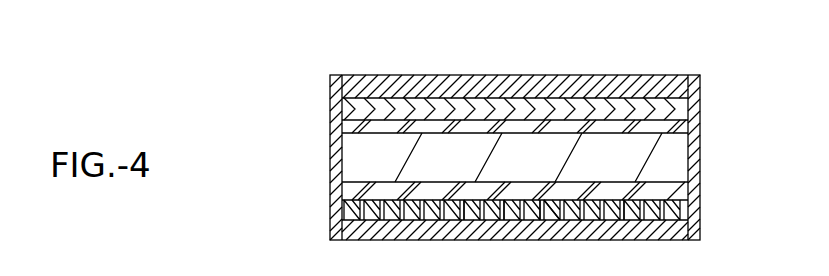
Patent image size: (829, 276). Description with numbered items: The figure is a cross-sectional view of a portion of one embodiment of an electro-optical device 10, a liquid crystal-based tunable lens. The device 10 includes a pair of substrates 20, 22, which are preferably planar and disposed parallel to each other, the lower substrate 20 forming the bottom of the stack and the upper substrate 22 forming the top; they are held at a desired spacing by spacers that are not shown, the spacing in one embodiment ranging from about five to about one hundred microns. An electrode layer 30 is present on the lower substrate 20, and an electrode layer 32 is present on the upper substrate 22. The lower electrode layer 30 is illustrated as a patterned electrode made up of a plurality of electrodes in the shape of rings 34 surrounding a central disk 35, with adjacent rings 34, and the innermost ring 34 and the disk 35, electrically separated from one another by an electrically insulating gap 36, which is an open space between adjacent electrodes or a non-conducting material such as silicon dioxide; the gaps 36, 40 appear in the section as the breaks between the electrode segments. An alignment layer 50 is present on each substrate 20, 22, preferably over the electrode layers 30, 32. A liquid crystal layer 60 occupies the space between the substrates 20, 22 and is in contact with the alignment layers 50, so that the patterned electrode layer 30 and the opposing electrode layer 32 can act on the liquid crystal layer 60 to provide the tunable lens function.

The electro-optical device 10 is at (409, 75).
The upper substrate 22 is at (677, 90).
The electrode layer 32 is at (345, 110).
The alignment layer 50 is at (682, 128).
The liquid crystal layer 60 is at (677, 160).
The electrode layer 30 is at (345, 212).
The lower substrate 20 is at (685, 232).
The ring 34 is at (465, 217).
The central disk 35 is at (507, 218).
The insulating gap 36 is at (540, 217).
The channel 40 is at (553, 217).